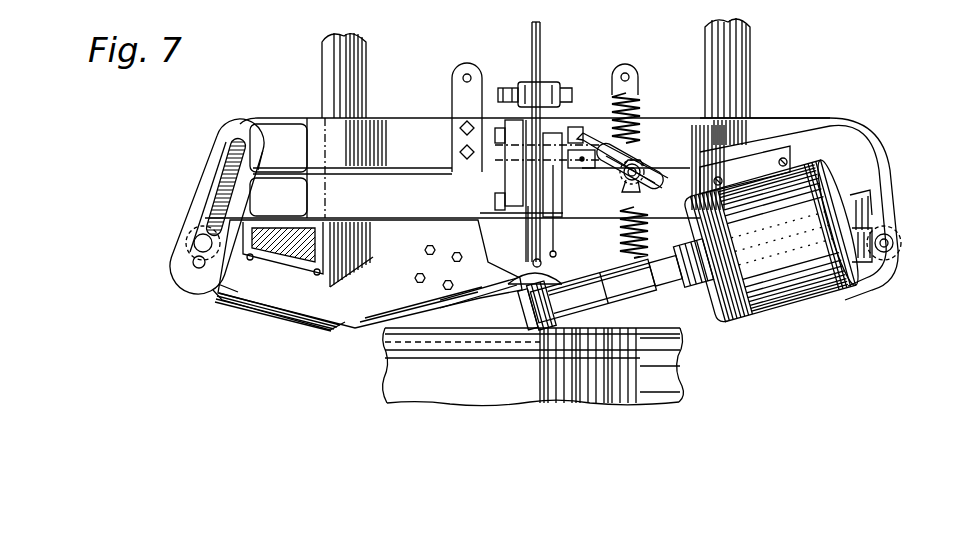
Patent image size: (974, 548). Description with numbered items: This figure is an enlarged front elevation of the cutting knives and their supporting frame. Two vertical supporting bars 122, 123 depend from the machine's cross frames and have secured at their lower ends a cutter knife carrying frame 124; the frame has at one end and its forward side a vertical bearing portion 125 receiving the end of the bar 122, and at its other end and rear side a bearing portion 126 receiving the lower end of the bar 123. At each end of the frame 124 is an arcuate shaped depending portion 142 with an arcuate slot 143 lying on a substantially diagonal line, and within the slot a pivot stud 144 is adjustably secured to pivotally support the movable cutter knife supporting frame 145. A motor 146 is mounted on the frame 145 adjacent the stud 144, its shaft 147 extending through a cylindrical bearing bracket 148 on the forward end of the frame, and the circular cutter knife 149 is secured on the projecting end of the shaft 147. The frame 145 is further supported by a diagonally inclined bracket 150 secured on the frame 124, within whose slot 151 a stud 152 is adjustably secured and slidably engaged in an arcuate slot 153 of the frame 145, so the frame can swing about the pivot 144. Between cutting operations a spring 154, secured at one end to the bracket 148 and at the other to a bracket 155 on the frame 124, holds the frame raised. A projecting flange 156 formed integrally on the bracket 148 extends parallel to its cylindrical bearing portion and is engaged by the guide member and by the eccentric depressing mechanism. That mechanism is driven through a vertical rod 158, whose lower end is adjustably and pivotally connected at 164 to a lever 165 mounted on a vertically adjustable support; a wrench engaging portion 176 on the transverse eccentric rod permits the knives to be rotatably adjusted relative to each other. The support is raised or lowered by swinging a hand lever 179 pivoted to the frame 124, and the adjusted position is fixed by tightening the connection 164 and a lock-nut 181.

The vertical supporting bar 122 is at (356, 66).
The vertical supporting bar 123 is at (733, 53).
The cutter knife carrying frame 124 is at (407, 133).
The vertical bearing portion 125 is at (317, 117).
The bearing portion 126 is at (733, 130).
The arcuate shaped depending portion 142 is at (207, 185).
The arcuate slot 143 is at (228, 158).
The pivot stud 144 is at (200, 247).
The movable cutter knife supporting frame 145 is at (300, 298).
The motor 146 is at (240, 310).
The shaft 147 is at (658, 298).
The cylindrical bearing bracket 148 is at (612, 306).
The circular cutter knife 149 is at (550, 333).
The bracket 150 is at (590, 143).
The slot 151 is at (660, 178).
The stud 152 is at (630, 167).
The arcuate slot 153 is at (643, 140).
The spring 154 is at (613, 67).
The bracket 155 is at (473, 92).
The projecting flange 156 is at (522, 278).
The vertical rod 158 is at (543, 32).
The adjustable pivotal connection 164 is at (536, 88).
The lever 165 is at (552, 105).
The wrench engaging portion 176 is at (533, 263).
The hand lever 179 is at (550, 165).
The lock-nut 181 is at (510, 173).